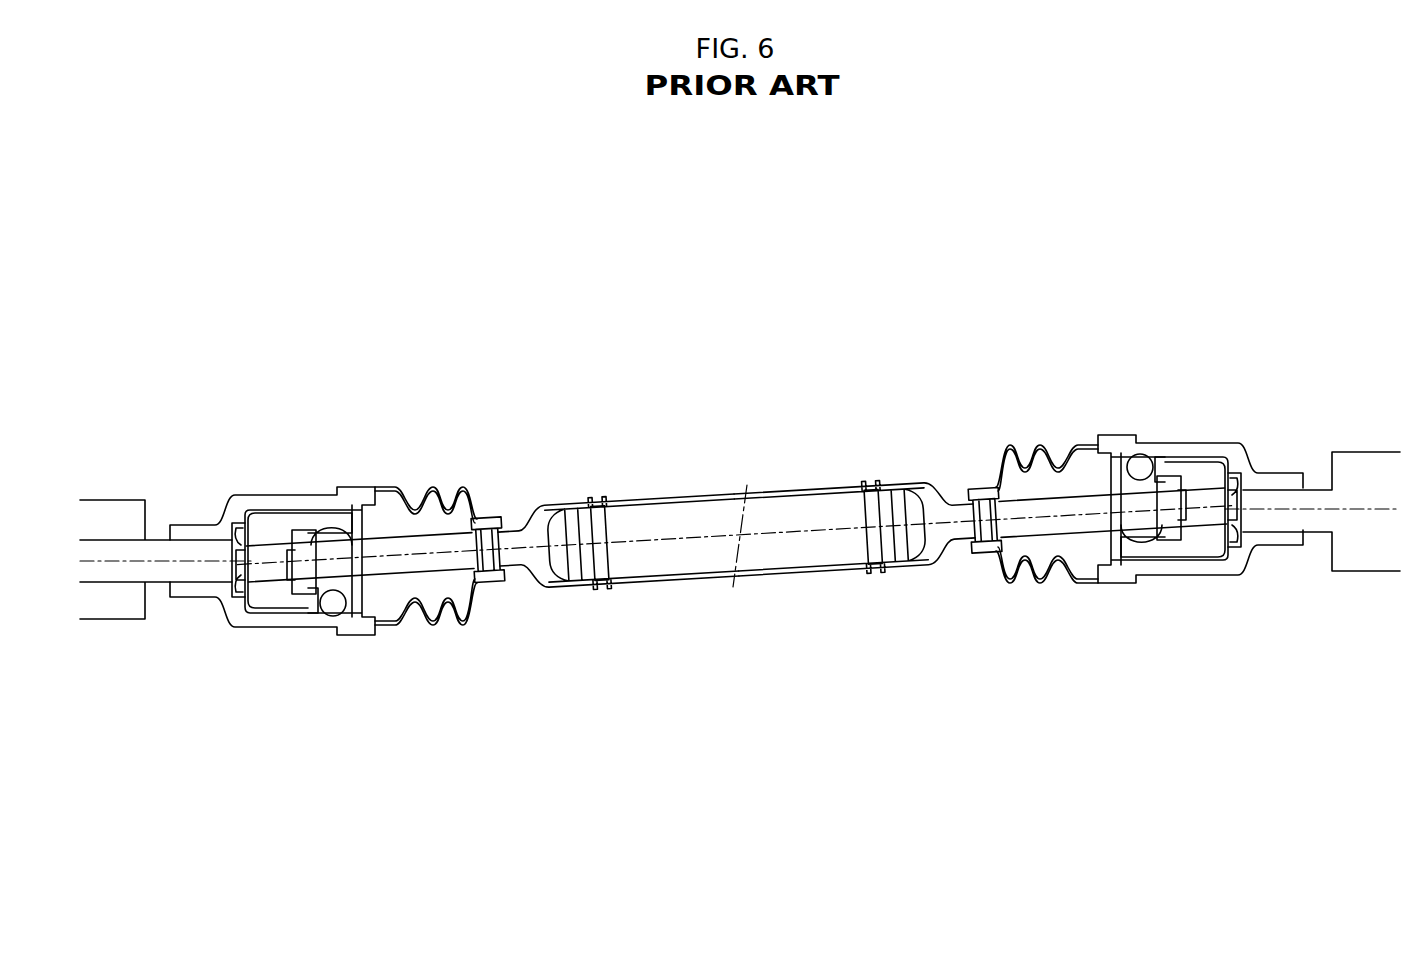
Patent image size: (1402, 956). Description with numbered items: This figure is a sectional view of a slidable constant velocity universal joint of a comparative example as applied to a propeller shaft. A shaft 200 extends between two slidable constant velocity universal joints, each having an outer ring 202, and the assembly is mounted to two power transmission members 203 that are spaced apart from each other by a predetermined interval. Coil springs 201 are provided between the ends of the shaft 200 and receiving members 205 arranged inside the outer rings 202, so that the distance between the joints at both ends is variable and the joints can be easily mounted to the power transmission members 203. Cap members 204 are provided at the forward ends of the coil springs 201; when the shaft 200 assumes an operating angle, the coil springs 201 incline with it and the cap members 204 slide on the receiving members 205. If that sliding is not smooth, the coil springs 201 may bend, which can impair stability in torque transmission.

The shaft 200 is at (803, 490).
The coil spring 201 is at (272, 547).
The outer ring 202 is at (313, 492).
The power transmission member 203 is at (112, 612).
The cap member 204 is at (240, 527).
The receiving member 205 is at (240, 597).